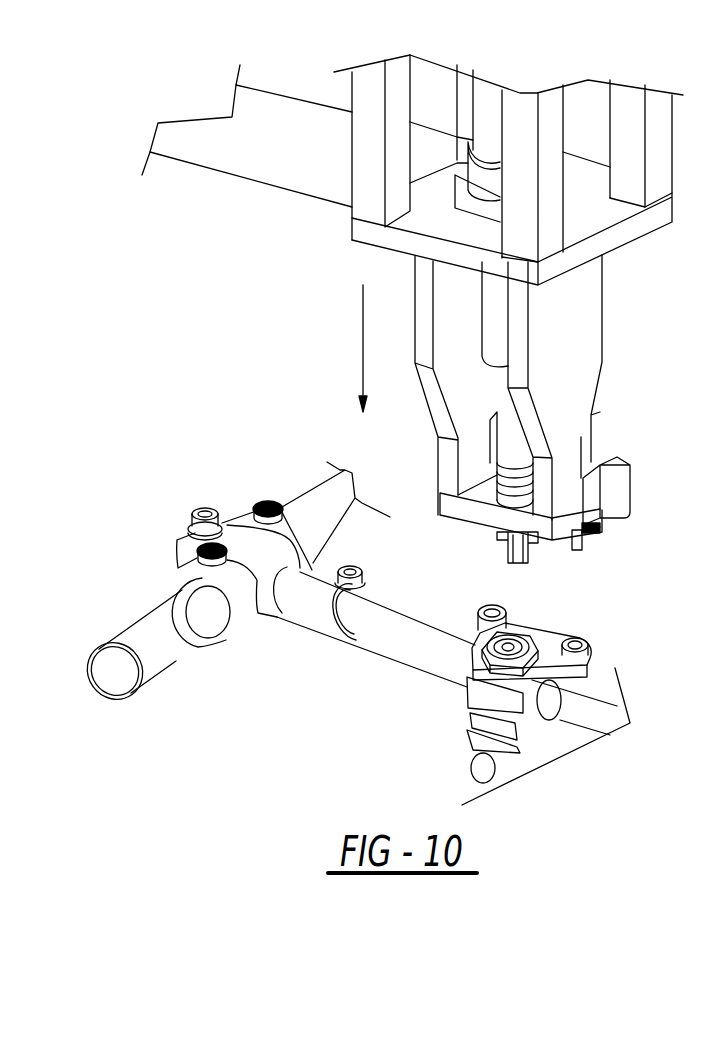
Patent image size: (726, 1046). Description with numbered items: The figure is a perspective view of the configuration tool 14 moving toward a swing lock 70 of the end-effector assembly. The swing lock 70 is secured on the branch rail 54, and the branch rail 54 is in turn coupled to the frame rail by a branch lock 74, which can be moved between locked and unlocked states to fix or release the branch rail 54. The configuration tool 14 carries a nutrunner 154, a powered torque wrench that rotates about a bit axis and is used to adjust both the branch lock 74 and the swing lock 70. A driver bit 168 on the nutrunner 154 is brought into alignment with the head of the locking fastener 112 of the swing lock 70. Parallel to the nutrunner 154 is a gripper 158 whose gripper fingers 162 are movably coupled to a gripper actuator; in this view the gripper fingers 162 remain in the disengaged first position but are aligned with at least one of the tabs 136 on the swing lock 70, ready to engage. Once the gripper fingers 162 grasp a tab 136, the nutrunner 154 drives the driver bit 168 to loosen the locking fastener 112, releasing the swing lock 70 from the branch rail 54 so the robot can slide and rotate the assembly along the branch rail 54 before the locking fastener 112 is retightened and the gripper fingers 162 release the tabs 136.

The configuration tool 14 is at (626, 345).
The nutrunner 154 is at (513, 438).
The gripper 158 is at (642, 479).
The gripper fingers 162 is at (565, 550).
The driver bit 168 is at (508, 557).
The branch lock 74 is at (207, 497).
The branch rail 54 is at (373, 653).
The swing lock 70 is at (445, 710).
The locking fastener 112 is at (482, 635).
The tabs 136 is at (588, 638).